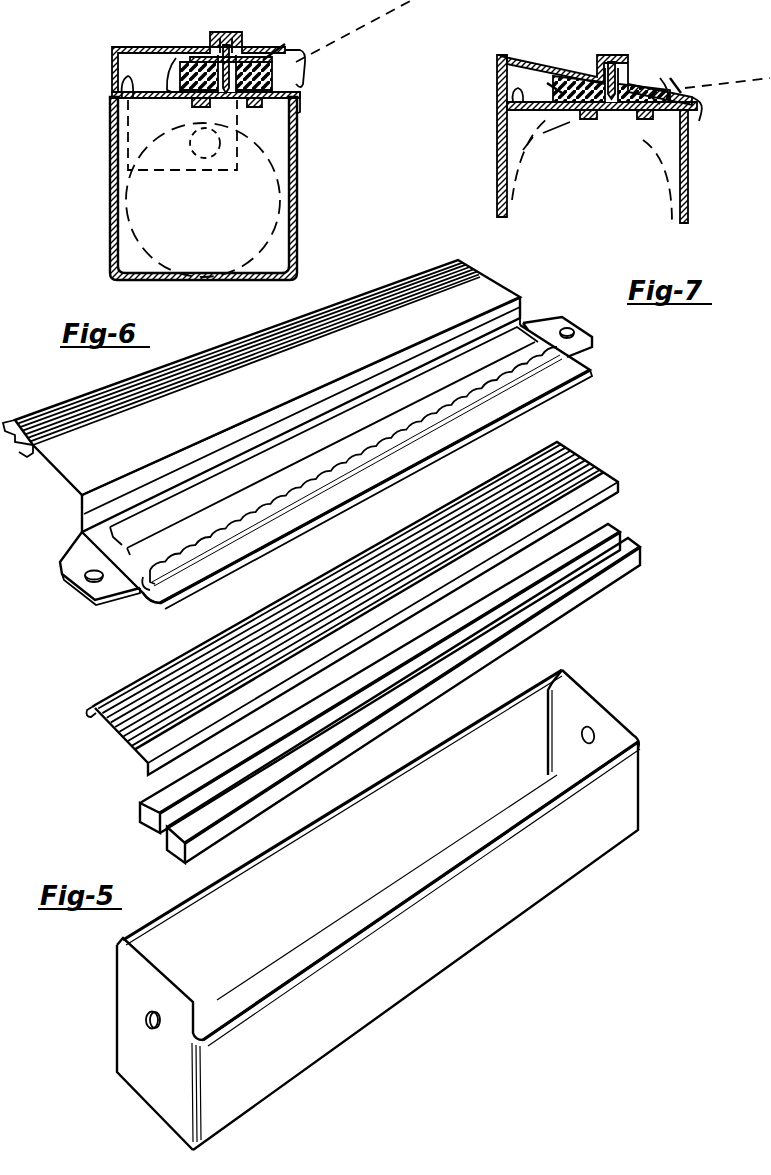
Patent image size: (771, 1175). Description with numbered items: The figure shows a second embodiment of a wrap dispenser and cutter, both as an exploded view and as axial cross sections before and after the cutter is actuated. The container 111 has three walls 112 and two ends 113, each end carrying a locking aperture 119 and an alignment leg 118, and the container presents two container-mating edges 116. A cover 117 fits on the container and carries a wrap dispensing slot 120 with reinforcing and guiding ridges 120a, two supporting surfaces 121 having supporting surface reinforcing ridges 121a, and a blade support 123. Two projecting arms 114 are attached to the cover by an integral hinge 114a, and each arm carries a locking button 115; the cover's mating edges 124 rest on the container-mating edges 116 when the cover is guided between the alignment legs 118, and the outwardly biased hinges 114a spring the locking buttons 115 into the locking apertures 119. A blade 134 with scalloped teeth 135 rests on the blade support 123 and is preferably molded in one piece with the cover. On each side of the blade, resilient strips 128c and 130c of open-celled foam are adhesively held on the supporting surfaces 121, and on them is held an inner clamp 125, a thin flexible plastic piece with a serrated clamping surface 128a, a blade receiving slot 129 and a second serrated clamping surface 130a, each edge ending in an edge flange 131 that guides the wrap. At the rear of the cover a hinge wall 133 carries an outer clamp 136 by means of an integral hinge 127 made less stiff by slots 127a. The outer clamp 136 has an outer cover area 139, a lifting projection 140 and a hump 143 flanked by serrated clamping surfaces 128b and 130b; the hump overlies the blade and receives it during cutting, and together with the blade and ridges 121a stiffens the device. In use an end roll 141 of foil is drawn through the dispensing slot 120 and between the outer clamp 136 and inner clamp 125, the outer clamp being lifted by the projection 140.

In FIG. 5, the container 111 is at (376, 901).
In FIG. 5, the walls 112 is at (381, 910).
In FIG. 5, the ends 113 is at (378, 910).
In FIG. 5, the projecting arms 114 is at (588, 346).
In FIG. 5, the integral hinge 114a is at (146, 596).
In FIG. 5, the locking button 115 is at (86, 576).
In FIG. 6, the container-mating edges 116 is at (110, 113).
In FIG. 5, the container-mating edges 116 is at (388, 792).
In FIG. 5, the cover 117 is at (317, 460).
In FIG. 5, the alignment leg 118 is at (120, 947).
In FIG. 5, the locking aperture 119 is at (146, 1020).
In FIG. 5, the wrap dispensing slot 120 is at (226, 478).
In FIG. 5, the wrap dispensing slot reinforcing and guiding ridges 120a is at (112, 526).
In FIG. 6, the supporting surfaces 121 is at (185, 108).
In FIG. 5, the supporting surfaces 121 is at (337, 467).
In FIG. 6, the supporting surface reinforcing ridges 121a is at (185, 128).
In FIG. 5, the blade support 123 is at (150, 578).
In FIG. 6, the mating edges 124 is at (110, 96).
In FIG. 5, the inner clamp 125 is at (605, 465).
In FIG. 6, the integral hinge 127 is at (108, 48).
In FIG. 7, the integral hinge 127 is at (633, 139).
In FIG. 5, the integral hinge 127 is at (317, 429).
In FIG. 5, the slots 127a is at (157, 462).
In FIG. 7, the serrated clamping surface 128a is at (573, 118).
In FIG. 5, the serrated clamping surface 128a is at (562, 452).
In FIG. 7, the serrated clamping surface 128b is at (578, 72).
In FIG. 5, the serrated clamping surface 128b is at (481, 275).
In FIG. 7, the resilient strip 128c is at (598, 92).
In FIG. 5, the resilient strip 128c is at (140, 818).
In FIG. 5, the blade receiving slot 129 is at (354, 609).
In FIG. 7, the second serrated clamping surface 130a is at (641, 100).
In FIG. 5, the second serrated clamping surface 130a is at (590, 485).
In FIG. 7, the serrated clamping surface 130b is at (672, 74).
In FIG. 5, the serrated clamping surface 130b is at (458, 259).
In FIG. 7, the resilient strip 130c is at (652, 104).
In FIG. 5, the resilient strip 130c is at (176, 852).
In FIG. 6, the edge flange 131 is at (160, 75).
In FIG. 5, the edge flange 131 is at (86, 713).
In FIG. 6, the hinge wall 133 is at (116, 78).
In FIG. 5, the hinge wall 133 is at (82, 520).
In FIG. 5, the blade 134 is at (182, 554).
In FIG. 5, the scalloped teeth 135 is at (388, 424).
In FIG. 5, the outer clamp 136 is at (58, 489).
In FIG. 6, the outer cover area 139 is at (176, 62).
In FIG. 5, the outer cover area 139 is at (274, 378).
In FIG. 6, the lifting projection 140 is at (290, 46).
In FIG. 7, the lifting projection 140 is at (675, 85).
In FIG. 5, the lifting projection 140 is at (5, 416).
In FIG. 6, the end roll 141 is at (276, 233).
In FIG. 6, the hump 143 is at (226, 69).
In FIG. 7, the hump 143 is at (618, 60).
In FIG. 5, the hump 143 is at (20, 455).